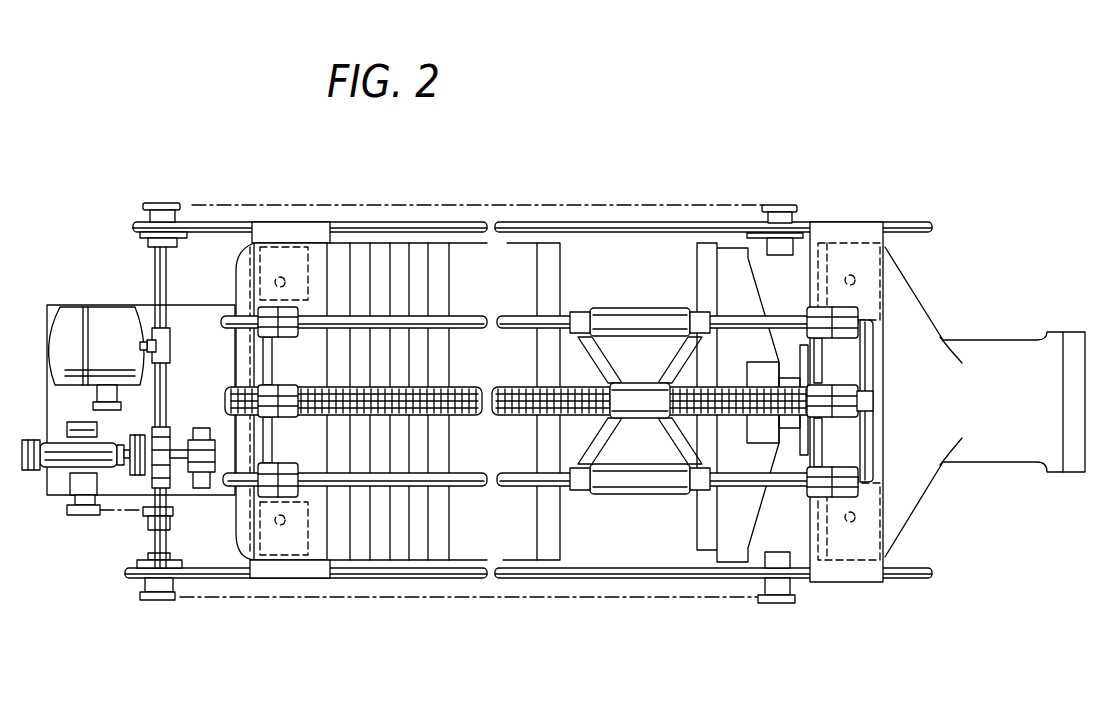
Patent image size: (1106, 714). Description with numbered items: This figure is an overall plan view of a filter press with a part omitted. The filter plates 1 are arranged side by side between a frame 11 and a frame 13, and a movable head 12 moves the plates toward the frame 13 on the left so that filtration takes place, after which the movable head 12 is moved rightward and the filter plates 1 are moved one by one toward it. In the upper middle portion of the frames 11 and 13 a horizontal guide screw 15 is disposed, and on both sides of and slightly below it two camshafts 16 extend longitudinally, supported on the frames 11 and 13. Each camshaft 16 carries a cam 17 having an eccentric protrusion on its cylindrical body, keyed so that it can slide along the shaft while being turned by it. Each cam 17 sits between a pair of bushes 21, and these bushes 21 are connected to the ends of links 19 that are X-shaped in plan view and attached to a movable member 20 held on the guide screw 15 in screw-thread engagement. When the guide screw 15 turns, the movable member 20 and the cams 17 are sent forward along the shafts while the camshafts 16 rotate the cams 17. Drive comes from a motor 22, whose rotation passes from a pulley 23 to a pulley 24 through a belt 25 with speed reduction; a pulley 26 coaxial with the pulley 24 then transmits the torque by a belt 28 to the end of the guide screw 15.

The filter plates 1 is at (552, 528).
The frame 11 is at (848, 574).
The movable head 12 is at (698, 553).
The frame 13 is at (284, 553).
The guide screw 15 is at (511, 387).
The camshafts 16 is at (512, 317).
The cam 17 is at (633, 317).
The links 19 is at (592, 351).
The movable member 20 is at (638, 398).
The bushes 21 is at (579, 318).
The motor 22 is at (121, 357).
The pulley 23 is at (176, 338).
The pulley 24 is at (150, 478).
The belt 25 is at (155, 380).
The pulley 26 is at (187, 419).
The belt 28 is at (183, 427).